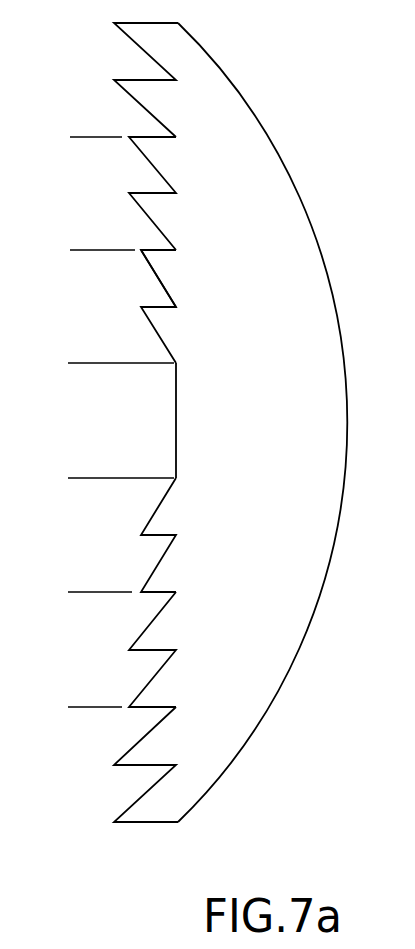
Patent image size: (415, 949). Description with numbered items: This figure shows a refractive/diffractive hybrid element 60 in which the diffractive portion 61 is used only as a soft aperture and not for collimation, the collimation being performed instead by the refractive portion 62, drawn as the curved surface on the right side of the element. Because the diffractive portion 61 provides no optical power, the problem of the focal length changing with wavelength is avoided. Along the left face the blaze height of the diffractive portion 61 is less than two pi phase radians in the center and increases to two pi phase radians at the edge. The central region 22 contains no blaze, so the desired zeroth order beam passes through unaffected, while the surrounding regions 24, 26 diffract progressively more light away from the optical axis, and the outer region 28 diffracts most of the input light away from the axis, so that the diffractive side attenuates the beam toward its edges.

The hybrid element 60 is at (201, 422).
The diffractive portion 61 is at (150, 265).
The refractive portion 62 is at (334, 285).
The central region 22 is at (126, 420).
The region 24 is at (122, 421).
The region 26 is at (122, 422).
The outer region 28 is at (123, 422).